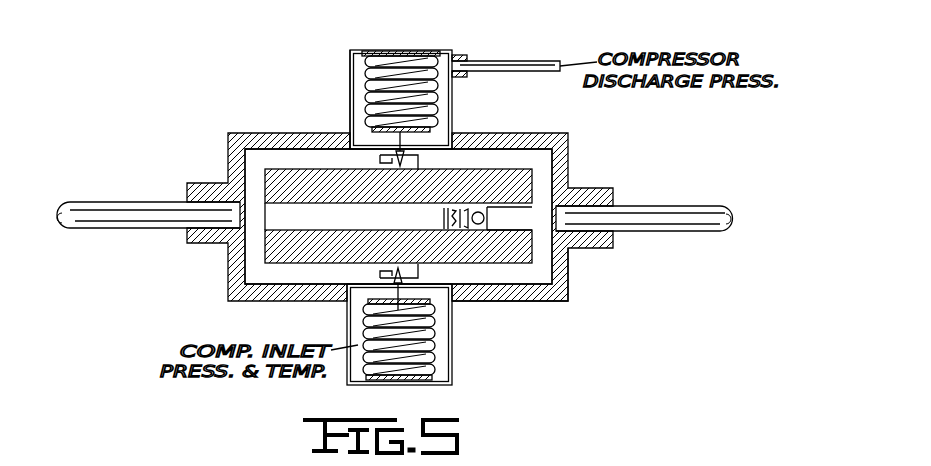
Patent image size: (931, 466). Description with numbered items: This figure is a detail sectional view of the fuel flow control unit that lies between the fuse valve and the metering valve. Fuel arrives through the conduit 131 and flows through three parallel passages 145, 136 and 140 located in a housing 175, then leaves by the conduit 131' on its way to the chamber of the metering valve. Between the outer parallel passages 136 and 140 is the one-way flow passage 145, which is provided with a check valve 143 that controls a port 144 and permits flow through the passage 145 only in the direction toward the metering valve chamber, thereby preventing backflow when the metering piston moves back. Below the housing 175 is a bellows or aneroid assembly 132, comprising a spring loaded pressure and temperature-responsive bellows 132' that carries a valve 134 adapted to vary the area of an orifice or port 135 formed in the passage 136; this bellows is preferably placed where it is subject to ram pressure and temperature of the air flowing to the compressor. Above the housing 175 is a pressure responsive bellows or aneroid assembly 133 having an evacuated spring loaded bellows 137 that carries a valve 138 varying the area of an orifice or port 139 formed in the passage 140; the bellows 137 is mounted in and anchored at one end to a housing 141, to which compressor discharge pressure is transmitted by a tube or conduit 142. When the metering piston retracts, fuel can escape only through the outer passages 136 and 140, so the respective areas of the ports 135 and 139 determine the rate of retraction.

The conduit 131 is at (645, 205).
The conduit 131' is at (148, 195).
The bellows or aneroid assembly 132 is at (425, 334).
The pressure and temperature-responsive bellows 132' is at (435, 341).
The pressure responsive bellows or aneroid assembly 133 is at (462, 108).
The valve 134 is at (393, 290).
The orifice or port 135 is at (407, 267).
The passage 136 is at (532, 282).
The evacuated pressure-responsive spring loaded bellows 137 is at (440, 53).
The valve 138 is at (392, 143).
The orifice or port 139 is at (378, 162).
The passage 140 is at (502, 163).
The housing 141 is at (350, 60).
The tube or conduit 142 is at (521, 67).
The check valve 143 is at (487, 218).
The port 144 is at (507, 203).
The one-way flow passage 145 is at (270, 243).
The housing 175 is at (254, 133).